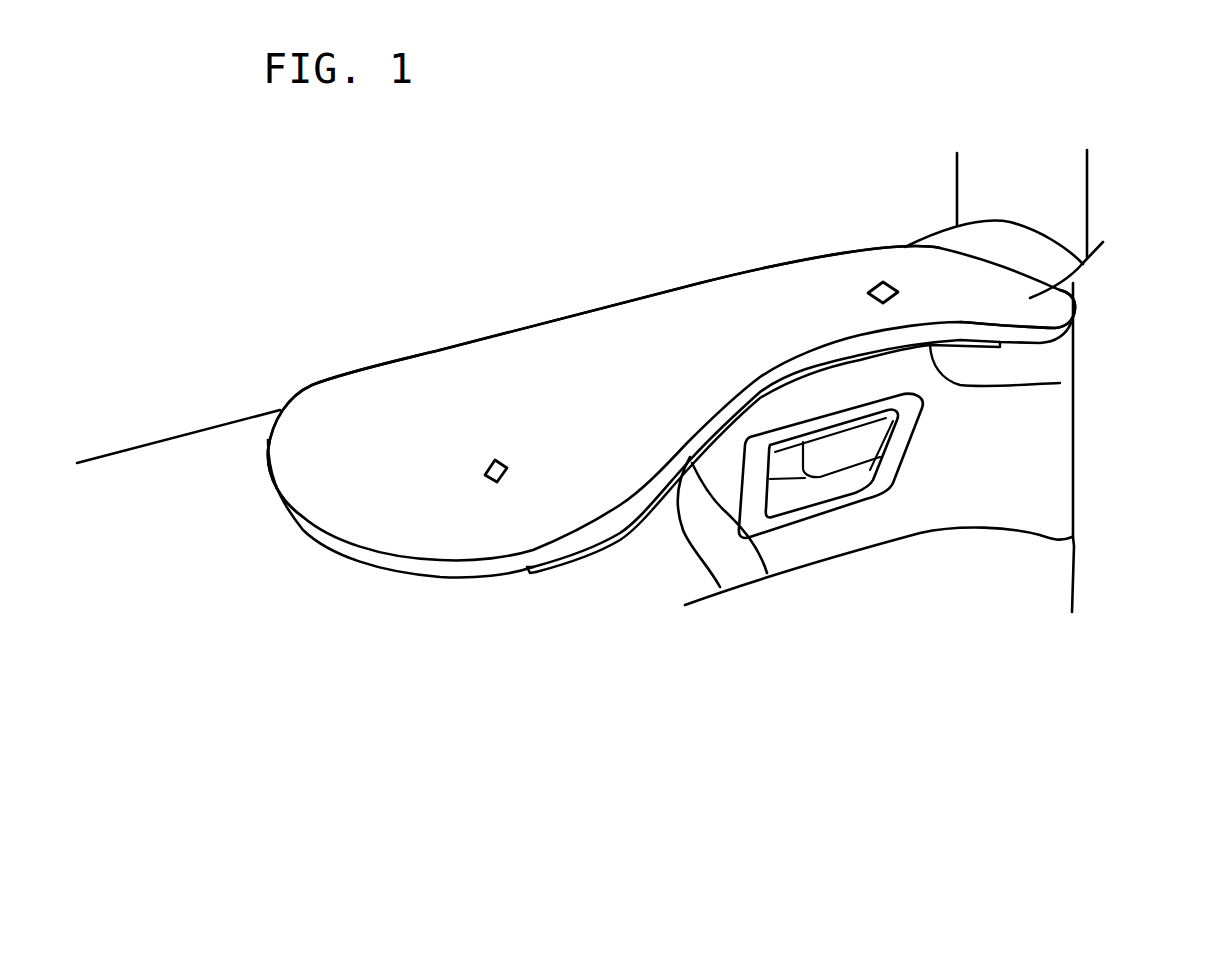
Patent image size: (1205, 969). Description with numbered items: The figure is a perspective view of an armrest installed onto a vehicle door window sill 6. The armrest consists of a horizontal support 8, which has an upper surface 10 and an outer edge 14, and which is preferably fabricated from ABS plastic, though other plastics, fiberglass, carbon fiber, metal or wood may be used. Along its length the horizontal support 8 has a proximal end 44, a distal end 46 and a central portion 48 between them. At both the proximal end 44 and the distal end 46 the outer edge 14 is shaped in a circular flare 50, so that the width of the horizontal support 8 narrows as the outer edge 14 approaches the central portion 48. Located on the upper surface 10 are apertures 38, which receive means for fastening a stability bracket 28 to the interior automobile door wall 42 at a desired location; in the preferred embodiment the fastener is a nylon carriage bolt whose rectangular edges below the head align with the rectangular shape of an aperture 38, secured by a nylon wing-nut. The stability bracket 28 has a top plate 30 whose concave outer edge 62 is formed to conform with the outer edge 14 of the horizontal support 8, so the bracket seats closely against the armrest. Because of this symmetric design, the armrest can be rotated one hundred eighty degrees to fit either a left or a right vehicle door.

The vehicle door window sill 6 is at (240, 447).
The horizontal support 8 is at (595, 383).
The upper surface 10 is at (568, 378).
The outer edge 14 is at (350, 550).
The stability bracket 28 is at (720, 587).
The top plate 30 is at (767, 573).
The apertures 38 is at (492, 480).
The interior automobile door wall 42 is at (663, 540).
The proximal end 44 is at (342, 493).
The distal end 46 is at (1068, 286).
The central portion 48 is at (710, 327).
The circular flare 50 is at (447, 553).
The concave outer edge 62 is at (1060, 383).